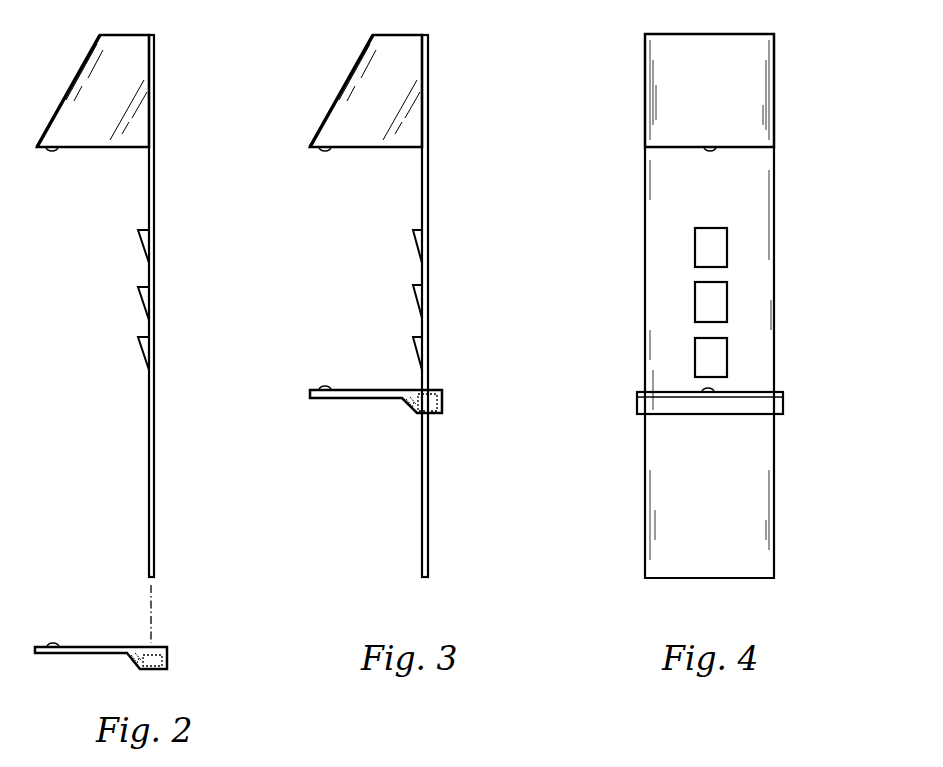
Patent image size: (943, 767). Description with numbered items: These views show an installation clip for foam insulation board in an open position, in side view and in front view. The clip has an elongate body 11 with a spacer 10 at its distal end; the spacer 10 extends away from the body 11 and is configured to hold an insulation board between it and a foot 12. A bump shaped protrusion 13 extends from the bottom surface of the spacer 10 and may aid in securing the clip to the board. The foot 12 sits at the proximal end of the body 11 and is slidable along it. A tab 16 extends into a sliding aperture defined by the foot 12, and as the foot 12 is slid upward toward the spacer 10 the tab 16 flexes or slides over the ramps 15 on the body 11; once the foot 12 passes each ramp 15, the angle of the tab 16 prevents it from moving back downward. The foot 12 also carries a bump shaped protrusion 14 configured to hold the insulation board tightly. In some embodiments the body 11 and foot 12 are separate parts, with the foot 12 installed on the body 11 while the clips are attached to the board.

In FIG. 2, the spacer 10 is at (131, 55).
In FIG. 3, the spacer 10 is at (413, 57).
In FIG. 4, the spacer 10 is at (774, 80).
In FIG. 2, the elongate body 11 is at (154, 477).
In FIG. 3, the elongate body 11 is at (428, 475).
In FIG. 4, the elongate body 11 is at (750, 178).
In FIG. 2, the foot 12 is at (167, 660).
In FIG. 3, the foot 12 is at (442, 405).
In FIG. 4, the foot 12 is at (783, 405).
In FIG. 2, the bump shaped protrusion 13 is at (52, 153).
In FIG. 3, the bump shaped protrusion 13 is at (325, 153).
In FIG. 4, the bump shaped protrusion 13 is at (707, 152).
In FIG. 2, the bump shaped protrusion 14 is at (55, 645).
In FIG. 3, the bump shaped protrusion 14 is at (325, 387).
In FIG. 4, the bump shaped protrusion 14 is at (708, 389).
In FIG. 2, the ramps 15 is at (138, 345).
In FIG. 3, the ramps 15 is at (413, 345).
In FIG. 4, the ramps 15 is at (717, 242).
In FIG. 2, the tab 16 is at (140, 668).
In FIG. 3, the tab 16 is at (417, 413).